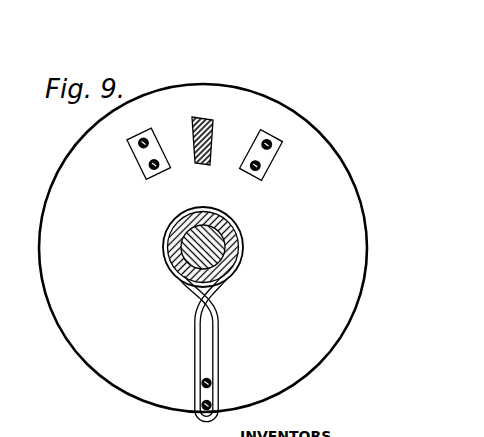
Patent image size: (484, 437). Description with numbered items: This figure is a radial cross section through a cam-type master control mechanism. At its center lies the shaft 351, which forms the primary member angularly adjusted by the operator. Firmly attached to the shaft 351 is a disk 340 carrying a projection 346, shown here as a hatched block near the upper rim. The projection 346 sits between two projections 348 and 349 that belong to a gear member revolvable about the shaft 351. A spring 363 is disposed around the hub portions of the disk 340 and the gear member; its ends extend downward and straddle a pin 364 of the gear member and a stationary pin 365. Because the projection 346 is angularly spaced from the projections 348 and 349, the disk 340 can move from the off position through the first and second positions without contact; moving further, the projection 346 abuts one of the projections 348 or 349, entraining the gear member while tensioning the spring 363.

The disk 340 is at (103, 366).
The projection 346 is at (215, 120).
The projection 348 is at (160, 123).
The projection 349 is at (292, 130).
The shaft 351 is at (220, 243).
The spring 363 is at (220, 308).
The pin 364 is at (212, 382).
The stationary pin 365 is at (214, 404).